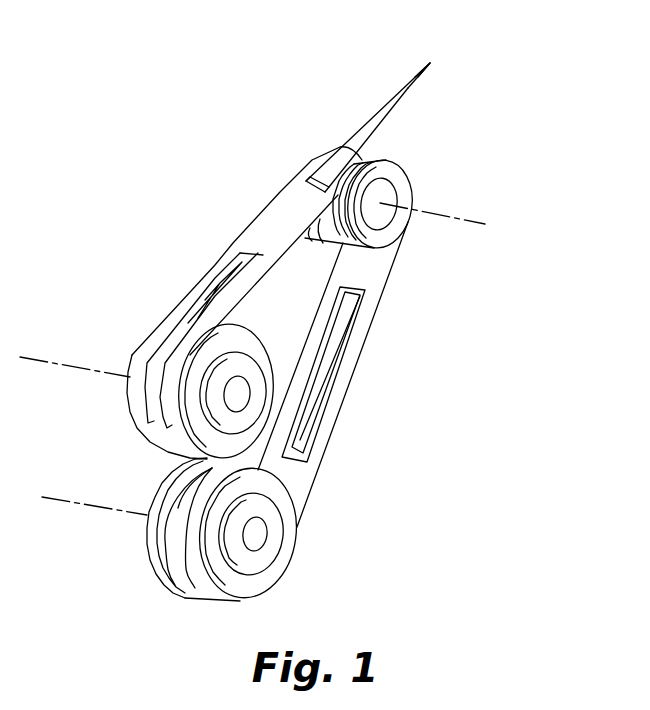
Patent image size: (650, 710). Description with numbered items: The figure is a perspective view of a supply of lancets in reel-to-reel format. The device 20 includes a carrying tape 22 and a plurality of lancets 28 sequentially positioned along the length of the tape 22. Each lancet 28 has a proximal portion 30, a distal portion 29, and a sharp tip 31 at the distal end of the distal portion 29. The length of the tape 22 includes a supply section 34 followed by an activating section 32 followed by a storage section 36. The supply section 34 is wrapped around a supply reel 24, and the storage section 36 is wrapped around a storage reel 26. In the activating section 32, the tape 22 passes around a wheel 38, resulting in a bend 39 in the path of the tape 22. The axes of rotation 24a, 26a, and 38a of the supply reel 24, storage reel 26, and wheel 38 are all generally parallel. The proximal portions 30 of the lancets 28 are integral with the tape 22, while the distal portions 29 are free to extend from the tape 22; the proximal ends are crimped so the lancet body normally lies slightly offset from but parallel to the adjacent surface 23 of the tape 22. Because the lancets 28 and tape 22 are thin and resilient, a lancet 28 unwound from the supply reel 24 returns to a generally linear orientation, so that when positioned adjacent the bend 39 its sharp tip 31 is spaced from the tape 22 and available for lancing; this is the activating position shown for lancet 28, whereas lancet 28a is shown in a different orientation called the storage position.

The device 20 is at (505, 160).
The carrying tape 22 is at (348, 396).
The adjacent surface of the tape 23 is at (290, 228).
The supply reel 24 is at (260, 562).
The axis of rotation of the supply reel 24a is at (70, 498).
The storage reel 26 is at (255, 392).
The axis of rotation of the storage reel 26a is at (58, 358).
The lancet 28 is at (384, 97).
The lancet in storage position 28a is at (165, 540).
The distal portion 29 is at (413, 90).
The proximal portion 30 is at (323, 177).
The sharp tip 31 is at (430, 63).
The activating section 32 is at (300, 185).
The supply section 34 is at (153, 572).
The storage section 36 is at (127, 394).
The wheel 38 is at (404, 193).
The axis of rotation of the wheel 38a is at (468, 224).
The bend 39 is at (397, 168).